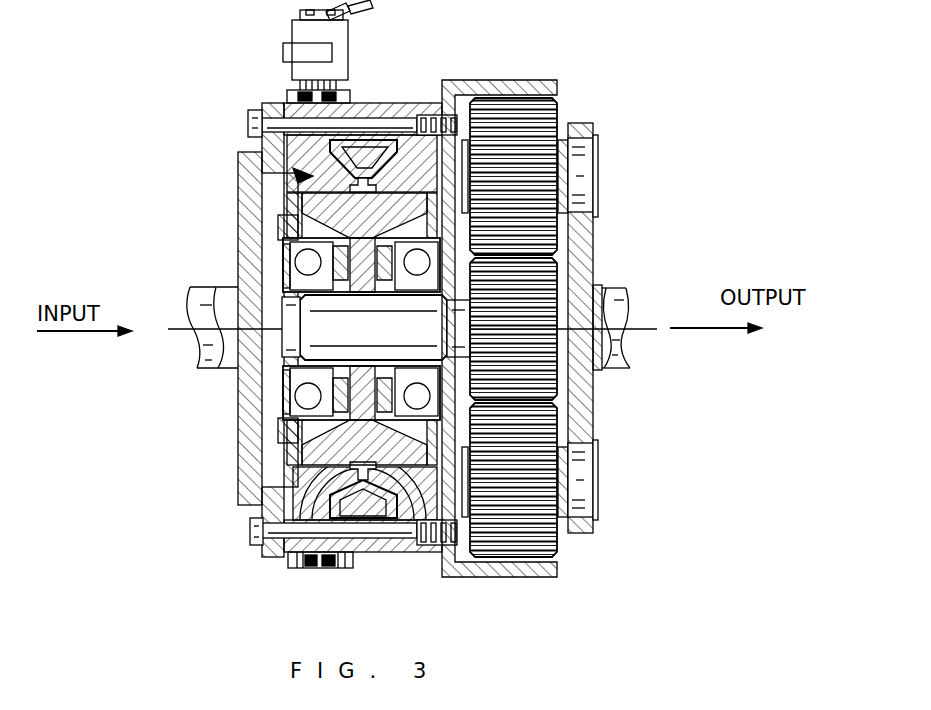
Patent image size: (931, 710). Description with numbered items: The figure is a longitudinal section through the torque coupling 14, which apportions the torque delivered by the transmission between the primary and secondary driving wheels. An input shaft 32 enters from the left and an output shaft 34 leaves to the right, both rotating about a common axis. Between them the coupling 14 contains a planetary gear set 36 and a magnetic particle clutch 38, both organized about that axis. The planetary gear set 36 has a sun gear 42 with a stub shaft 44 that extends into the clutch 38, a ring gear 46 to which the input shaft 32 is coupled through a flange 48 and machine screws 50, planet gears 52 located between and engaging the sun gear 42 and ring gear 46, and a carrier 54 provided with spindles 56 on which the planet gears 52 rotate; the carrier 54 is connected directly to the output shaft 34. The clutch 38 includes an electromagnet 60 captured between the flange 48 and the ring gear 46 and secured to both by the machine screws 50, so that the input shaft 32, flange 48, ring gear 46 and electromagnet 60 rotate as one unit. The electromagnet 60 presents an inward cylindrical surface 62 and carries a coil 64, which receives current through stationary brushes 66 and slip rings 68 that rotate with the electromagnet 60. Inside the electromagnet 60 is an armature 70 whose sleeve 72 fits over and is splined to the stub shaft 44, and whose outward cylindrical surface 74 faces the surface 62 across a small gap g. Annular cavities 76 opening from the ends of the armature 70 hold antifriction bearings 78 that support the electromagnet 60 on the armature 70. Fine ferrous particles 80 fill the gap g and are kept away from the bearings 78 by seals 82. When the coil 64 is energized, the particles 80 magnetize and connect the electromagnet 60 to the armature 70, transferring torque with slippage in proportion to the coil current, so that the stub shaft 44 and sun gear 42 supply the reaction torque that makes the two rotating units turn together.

The torque coupling 14 is at (188, 170).
The input shaft 32 is at (202, 300).
The output shaft 34 is at (613, 368).
The planetary gear set 36 is at (600, 170).
The magnetic particle clutch 38 is at (290, 150).
The sun gear 42 is at (528, 290).
The stub shaft 44 is at (327, 342).
The ring gear 46 is at (535, 82).
The flange 48 is at (238, 198).
The machine screws 50 is at (405, 126).
The planet gears 52 is at (532, 132).
The carrier 54 is at (578, 236).
The spindles 56 is at (582, 465).
The electromagnet 60 is at (432, 545).
The cylindrical surface 62 is at (290, 447).
The coil 64 is at (385, 523).
The stationary brushes 66 is at (296, 88).
The slip rings 68 is at (328, 568).
The armature 70 is at (340, 211).
The sleeve 72 is at (280, 287).
The cylindrical surface 74 is at (413, 525).
The annular cavities 76 is at (340, 430).
The antifriction bearings 78 is at (310, 397).
The magnetic particles 80 is at (290, 490).
The seals 82 is at (283, 415).
The gap g is at (293, 532).